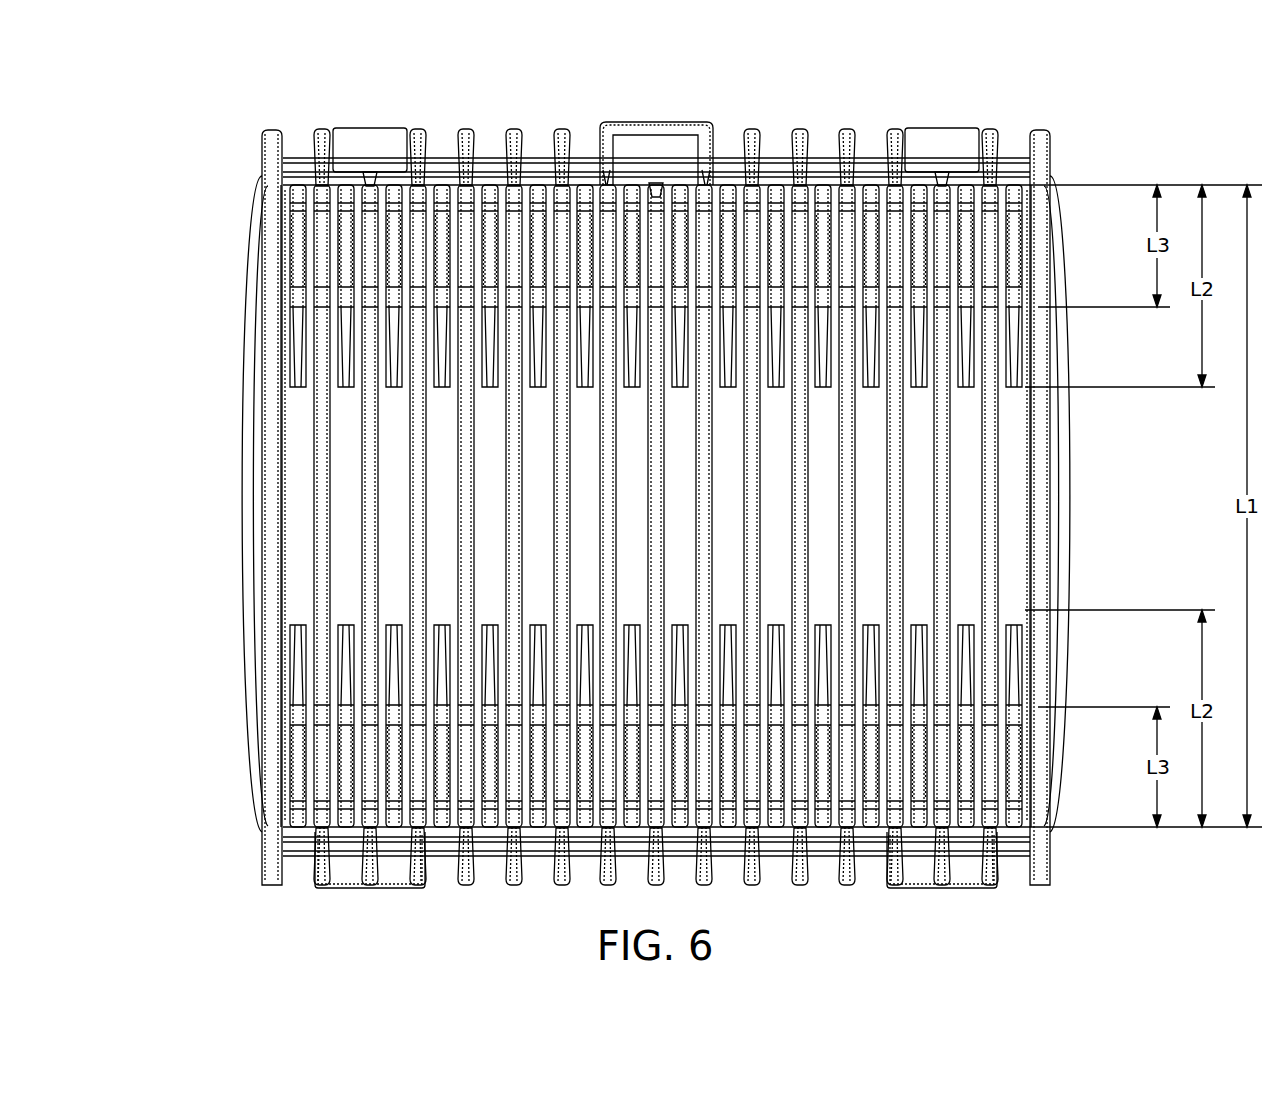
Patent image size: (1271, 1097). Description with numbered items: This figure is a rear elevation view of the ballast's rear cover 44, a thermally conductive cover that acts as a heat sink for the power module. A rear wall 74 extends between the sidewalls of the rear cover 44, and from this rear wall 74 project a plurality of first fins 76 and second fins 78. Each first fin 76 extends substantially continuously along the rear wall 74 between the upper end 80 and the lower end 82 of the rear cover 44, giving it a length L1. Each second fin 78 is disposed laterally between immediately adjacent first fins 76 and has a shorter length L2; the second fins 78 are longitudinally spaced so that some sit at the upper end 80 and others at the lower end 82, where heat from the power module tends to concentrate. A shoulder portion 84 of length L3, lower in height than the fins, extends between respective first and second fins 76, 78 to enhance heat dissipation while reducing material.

The rear cover 44 is at (250, 104).
The rear wall 74 is at (345, 485).
The first fins 76 is at (608, 197).
The second fins 78 is at (445, 390).
The upper end 80 is at (586, 132).
The lower end 82 is at (492, 882).
The shoulder portion 84 is at (1025, 240).